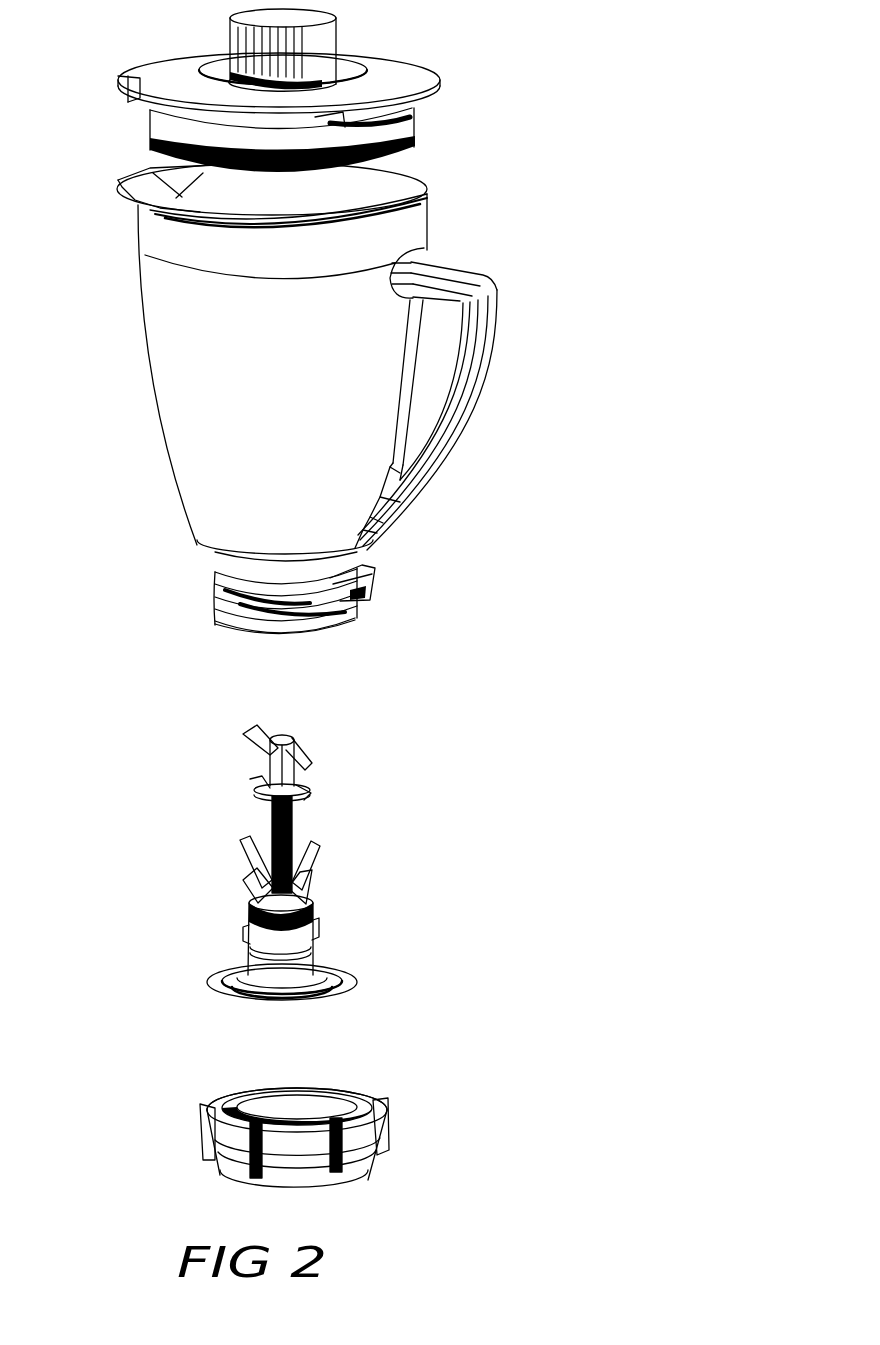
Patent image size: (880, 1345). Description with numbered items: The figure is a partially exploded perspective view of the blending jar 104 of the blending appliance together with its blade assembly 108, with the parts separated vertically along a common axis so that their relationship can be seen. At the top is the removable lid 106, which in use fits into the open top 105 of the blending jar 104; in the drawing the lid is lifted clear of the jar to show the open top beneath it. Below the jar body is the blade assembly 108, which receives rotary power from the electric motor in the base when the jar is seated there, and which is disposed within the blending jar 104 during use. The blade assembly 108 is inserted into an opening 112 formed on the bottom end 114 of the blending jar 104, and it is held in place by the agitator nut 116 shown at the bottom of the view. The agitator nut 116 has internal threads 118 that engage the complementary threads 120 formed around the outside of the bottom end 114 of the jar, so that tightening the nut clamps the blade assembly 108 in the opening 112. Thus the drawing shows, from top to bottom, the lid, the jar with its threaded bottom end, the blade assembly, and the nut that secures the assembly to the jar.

The blending jar 104 is at (180, 407).
The open top 105 is at (410, 178).
The removable lid 106 is at (410, 66).
The blade assembly 108 is at (413, 983).
The opening 112 is at (343, 623).
The bottom end 114 is at (360, 597).
The agitator nut 116 is at (352, 1175).
The internal threads 118 is at (217, 1092).
The complementary threads 120 is at (215, 614).